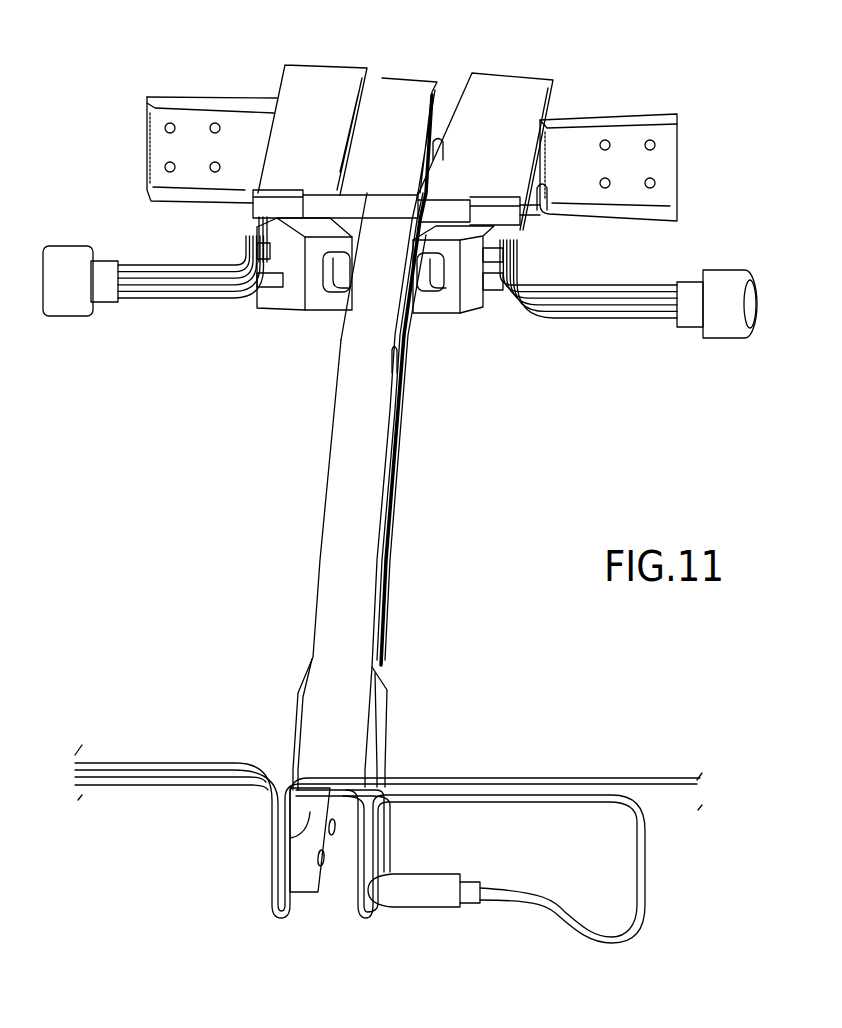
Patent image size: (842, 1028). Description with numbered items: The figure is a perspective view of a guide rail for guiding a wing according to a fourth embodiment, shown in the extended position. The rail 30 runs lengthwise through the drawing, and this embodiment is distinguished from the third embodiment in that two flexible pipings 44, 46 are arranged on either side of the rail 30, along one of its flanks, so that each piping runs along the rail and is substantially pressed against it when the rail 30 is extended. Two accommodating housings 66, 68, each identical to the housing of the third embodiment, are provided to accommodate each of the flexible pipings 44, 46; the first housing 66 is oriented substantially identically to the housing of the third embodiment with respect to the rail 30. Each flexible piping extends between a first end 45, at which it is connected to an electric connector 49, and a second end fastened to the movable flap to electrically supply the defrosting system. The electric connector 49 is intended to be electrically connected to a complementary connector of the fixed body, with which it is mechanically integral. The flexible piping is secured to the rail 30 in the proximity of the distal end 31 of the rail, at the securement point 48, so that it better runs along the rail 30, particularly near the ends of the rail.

The rail 30 is at (352, 472).
The distal end 31 is at (310, 812).
The flexible piping 44 is at (395, 500).
The first end 45 is at (638, 325).
The flexible piping 46 is at (320, 524).
The securement point 48 is at (377, 685).
The electric connector 49 is at (63, 295).
The first housing 66 is at (582, 77).
The accommodating housing 68 is at (265, 52).